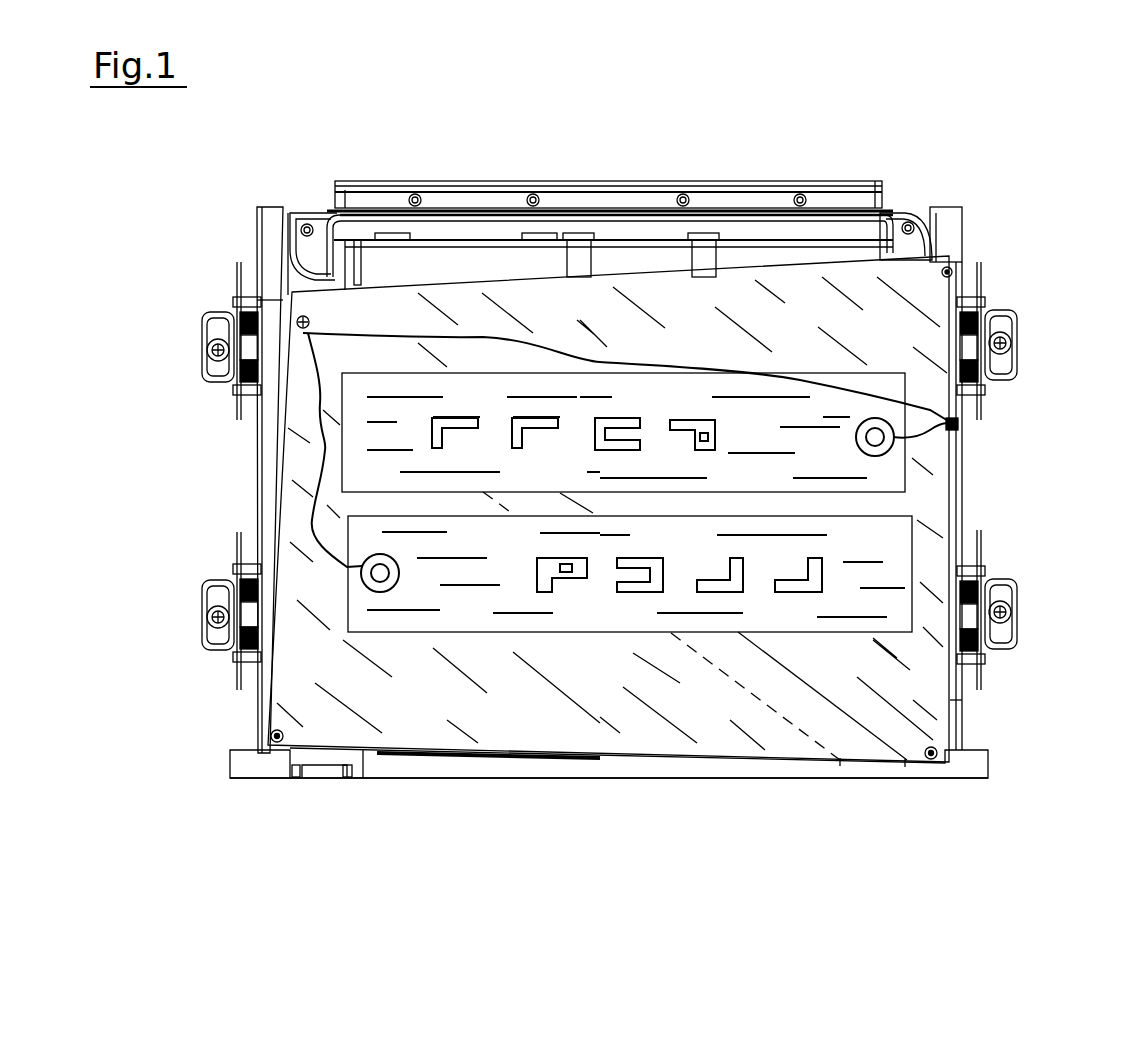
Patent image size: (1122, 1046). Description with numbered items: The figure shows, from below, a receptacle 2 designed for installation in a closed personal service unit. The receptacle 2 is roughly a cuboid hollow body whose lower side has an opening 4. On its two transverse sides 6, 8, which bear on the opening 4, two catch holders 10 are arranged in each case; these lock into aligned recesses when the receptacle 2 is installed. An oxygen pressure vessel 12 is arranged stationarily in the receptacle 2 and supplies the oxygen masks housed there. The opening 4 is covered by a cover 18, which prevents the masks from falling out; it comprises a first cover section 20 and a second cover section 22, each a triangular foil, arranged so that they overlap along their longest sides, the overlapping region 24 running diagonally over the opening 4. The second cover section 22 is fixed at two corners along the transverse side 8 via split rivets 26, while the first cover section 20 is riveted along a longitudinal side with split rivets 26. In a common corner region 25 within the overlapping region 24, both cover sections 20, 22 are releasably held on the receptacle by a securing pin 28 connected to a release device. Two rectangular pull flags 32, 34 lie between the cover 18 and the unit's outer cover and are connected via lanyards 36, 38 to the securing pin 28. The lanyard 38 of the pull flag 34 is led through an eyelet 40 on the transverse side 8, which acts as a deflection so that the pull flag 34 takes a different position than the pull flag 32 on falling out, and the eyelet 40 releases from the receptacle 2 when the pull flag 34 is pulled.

The receptacle 2 is at (880, 183).
The opening 4 is at (478, 228).
The transverse side 6 is at (238, 495).
The transverse side 8 is at (968, 515).
The catch holder 10 is at (985, 325).
The oxygen pressure vessel 12 is at (628, 263).
The cover 18 is at (426, 727).
The first cover section 20 is at (527, 742).
The second cover section 22 is at (955, 710).
The overlapping region 24 is at (840, 765).
The common corner region 25 is at (304, 222).
The split rivets 26 is at (955, 268).
The securing pin 28 is at (288, 291).
The pull flag 32 is at (897, 552).
The pull flag 34 is at (892, 478).
The lanyard 36 is at (320, 455).
The lanyard 38 is at (793, 373).
The eyelet 40 is at (957, 427).